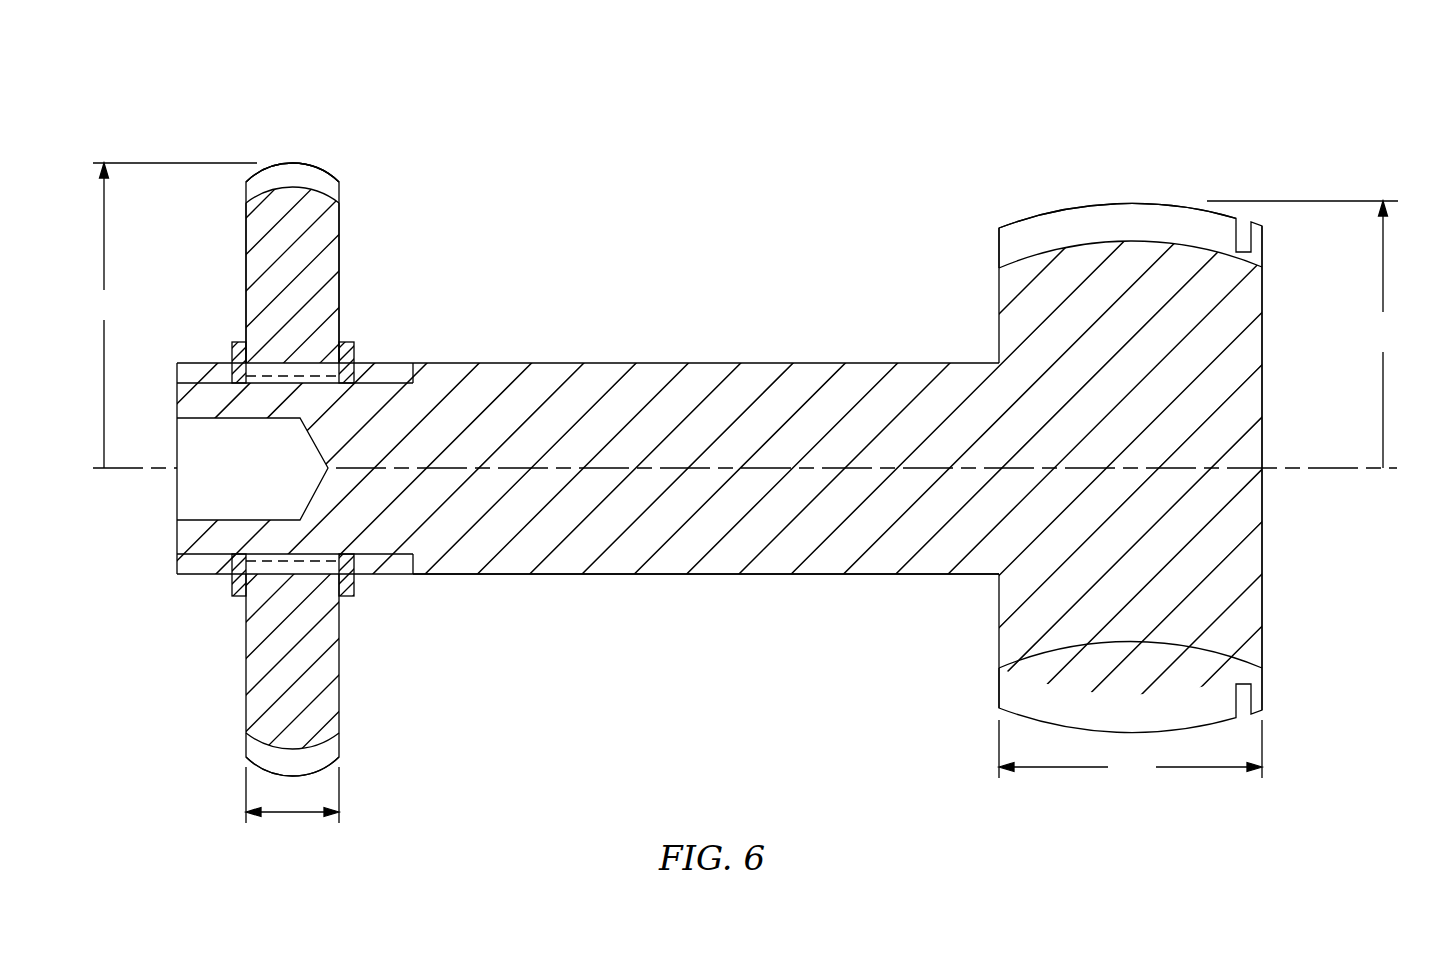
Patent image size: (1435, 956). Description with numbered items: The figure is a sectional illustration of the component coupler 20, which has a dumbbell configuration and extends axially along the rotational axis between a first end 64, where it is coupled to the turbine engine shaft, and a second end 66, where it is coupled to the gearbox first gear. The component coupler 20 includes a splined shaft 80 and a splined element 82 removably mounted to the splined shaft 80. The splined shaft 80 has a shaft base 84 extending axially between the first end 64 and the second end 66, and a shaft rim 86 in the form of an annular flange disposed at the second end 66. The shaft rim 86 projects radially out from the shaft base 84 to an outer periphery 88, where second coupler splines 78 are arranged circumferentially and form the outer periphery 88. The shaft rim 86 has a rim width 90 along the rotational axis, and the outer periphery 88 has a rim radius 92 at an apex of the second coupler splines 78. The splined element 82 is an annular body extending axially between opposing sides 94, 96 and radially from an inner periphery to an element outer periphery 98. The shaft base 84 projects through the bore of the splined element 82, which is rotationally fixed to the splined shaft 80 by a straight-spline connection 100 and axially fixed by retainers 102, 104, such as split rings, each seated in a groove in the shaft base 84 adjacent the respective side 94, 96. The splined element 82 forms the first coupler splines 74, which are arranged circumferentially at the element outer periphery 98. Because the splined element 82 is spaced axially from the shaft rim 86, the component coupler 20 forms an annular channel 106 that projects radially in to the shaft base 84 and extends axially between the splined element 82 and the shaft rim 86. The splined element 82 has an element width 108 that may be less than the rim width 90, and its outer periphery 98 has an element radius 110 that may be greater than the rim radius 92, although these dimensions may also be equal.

The component coupler 20 is at (187, 115).
The first end 64 is at (177, 400).
The second end 66 is at (1262, 357).
The first coupler splines 74 is at (339, 190).
The second coupler splines 78 is at (999, 248).
The splined shaft 80 is at (940, 617).
The splined element 82 is at (238, 672).
The shaft base 84 is at (641, 574).
The shaft rim 86 is at (1262, 595).
The outer periphery 88 is at (1122, 203).
The rim width 90 is at (1130, 751).
The rim radius 92 is at (1303, 334).
The side 94 is at (246, 265).
The side 96 is at (339, 255).
The outer periphery 98 is at (295, 163).
The spline connection 100 is at (290, 377).
The retainer 102 is at (232, 340).
The retainer 104 is at (354, 342).
The annular channel 106 is at (720, 265).
The element width 108 is at (292, 812).
The element radius 110 is at (168, 315).